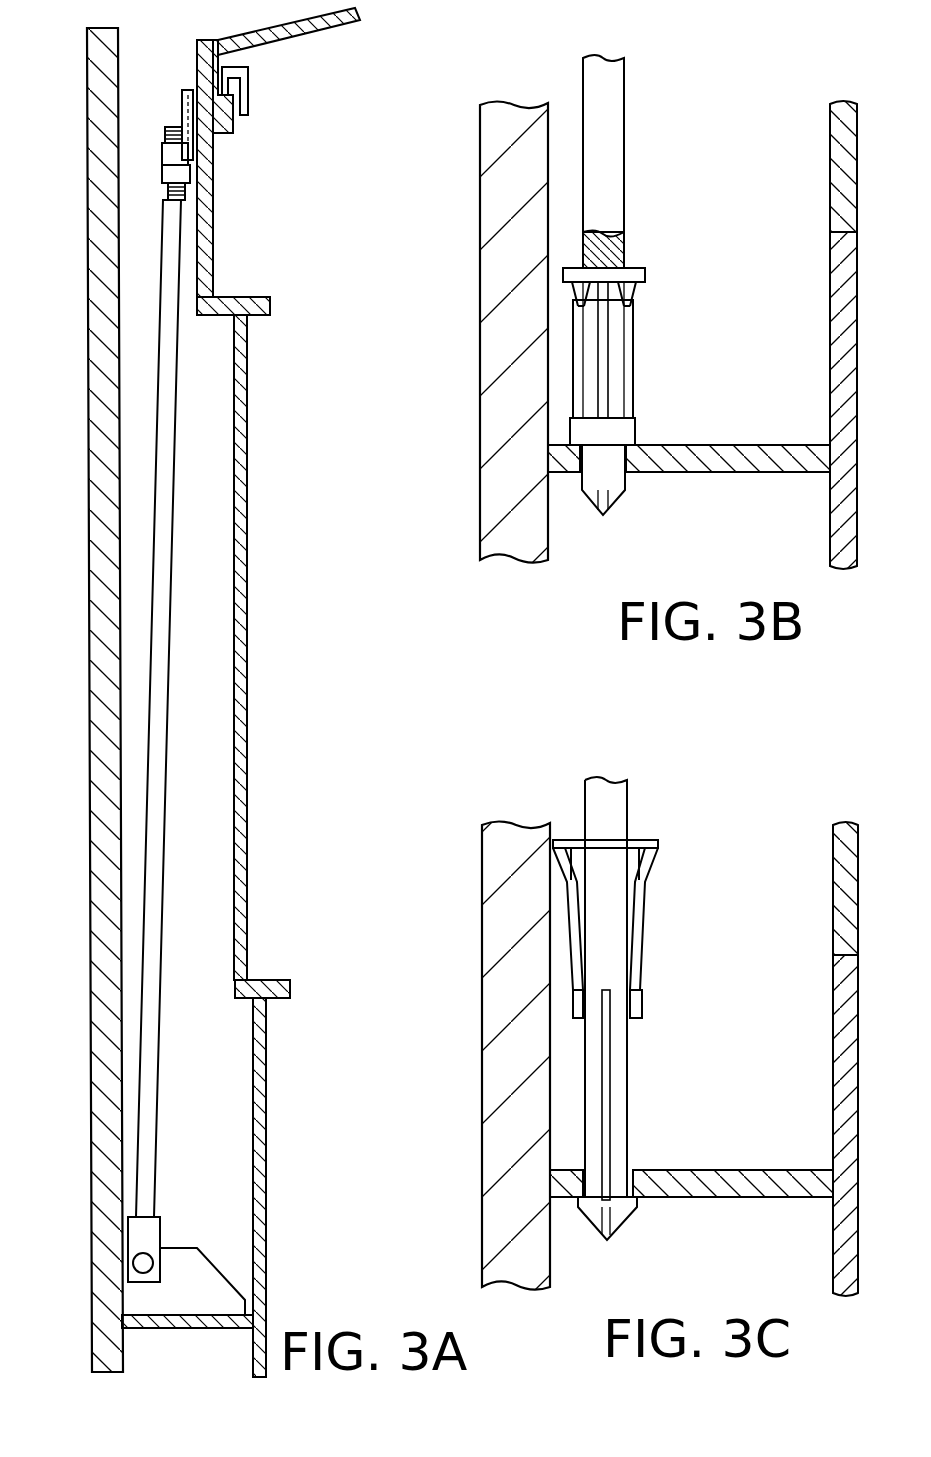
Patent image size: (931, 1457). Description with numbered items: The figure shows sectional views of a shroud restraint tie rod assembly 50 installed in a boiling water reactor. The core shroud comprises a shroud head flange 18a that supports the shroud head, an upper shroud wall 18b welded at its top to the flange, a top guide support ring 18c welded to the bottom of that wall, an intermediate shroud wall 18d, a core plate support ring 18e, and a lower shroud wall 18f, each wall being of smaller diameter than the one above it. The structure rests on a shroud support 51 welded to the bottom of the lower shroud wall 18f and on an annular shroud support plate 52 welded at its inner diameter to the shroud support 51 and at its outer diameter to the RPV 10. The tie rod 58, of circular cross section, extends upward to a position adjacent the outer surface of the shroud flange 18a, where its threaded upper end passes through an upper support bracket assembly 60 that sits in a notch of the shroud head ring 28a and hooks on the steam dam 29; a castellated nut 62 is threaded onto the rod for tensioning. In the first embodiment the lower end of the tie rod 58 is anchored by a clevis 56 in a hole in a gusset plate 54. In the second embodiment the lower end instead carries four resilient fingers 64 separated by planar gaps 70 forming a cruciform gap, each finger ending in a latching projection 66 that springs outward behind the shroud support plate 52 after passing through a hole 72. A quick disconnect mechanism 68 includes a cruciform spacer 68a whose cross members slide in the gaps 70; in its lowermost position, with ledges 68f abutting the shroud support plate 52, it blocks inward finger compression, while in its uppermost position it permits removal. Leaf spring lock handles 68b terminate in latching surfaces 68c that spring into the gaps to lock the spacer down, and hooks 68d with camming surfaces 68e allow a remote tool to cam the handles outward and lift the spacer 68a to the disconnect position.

In FIG. 3A, the RPV 10 is at (90, 615).
In FIG. 3B, the RPV 10 is at (500, 318).
In FIG. 3C, the RPV 10 is at (497, 988).
In FIG. 3A, the shroud head flange 18a is at (235, 128).
In FIG. 3A, the upper shroud wall 18b is at (213, 185).
In FIG. 3A, the top guide support ring 18c is at (222, 297).
In FIG. 3A, the intermediate shroud wall 18d is at (247, 510).
In FIG. 3A, the core plate support ring 18e is at (252, 980).
In FIG. 3A, the lower shroud wall 18f is at (266, 1112).
In FIG. 3B, the lower shroud wall 18f is at (837, 152).
In FIG. 3C, the lower shroud wall 18f is at (840, 895).
In FIG. 3A, the shroud head ring 28a is at (232, 38).
In FIG. 3A, the steam dam 29 is at (250, 80).
In FIG. 3A, the shroud restraint tie rod assembly 50 is at (208, 352).
In FIG. 3A, the shroud support 51 is at (267, 1238).
In FIG. 3B, the shroud support 51 is at (827, 527).
In FIG. 3C, the shroud support 51 is at (837, 1225).
In FIG. 3A, the shroud support plate 52 is at (153, 1330).
In FIG. 3B, the shroud support plate 52 is at (763, 475).
In FIG. 3C, the shroud support plate 52 is at (740, 1192).
In FIG. 3A, the gusset plate 54 is at (192, 1273).
In FIG. 3A, the clevis 56 is at (152, 1232).
In FIG. 3A, the tie rod 58 is at (170, 622).
In FIG. 3B, the tie rod 58 is at (612, 122).
In FIG. 3C, the tie rod 58 is at (612, 830).
In FIG. 3A, the upper support bracket assembly 60 is at (172, 96).
In FIG. 3A, the castellated nut 62 is at (165, 158).
In FIG. 3B, the resilient fingers 64 is at (615, 330).
In FIG. 3C, the resilient fingers 64 is at (617, 1128).
In FIG. 3B, the latching projection 66 is at (637, 477).
In FIG. 3C, the latching projection 66 is at (643, 1202).
In FIG. 3B, the quick disconnect mechanism 68 is at (675, 316).
In FIG. 3C, the quick disconnect mechanism 68 is at (656, 938).
In FIG. 3B, the cruciform spacer 68a is at (596, 494).
In FIG. 3C, the cruciform spacer 68a is at (610, 1038).
In FIG. 3B, the leaf spring lock handles 68b is at (622, 346).
In FIG. 3C, the leaf spring lock handles 68b is at (640, 968).
In FIG. 3B, the latching surface 68c is at (598, 240).
In FIG. 3C, the latching surface 68c is at (577, 838).
In FIG. 3B, the hooks 68d is at (636, 272).
In FIG. 3C, the hooks 68d is at (655, 848).
In FIG. 3B, the camming surface 68e is at (640, 300).
In FIG. 3C, the camming surface 68e is at (647, 880).
In FIG. 3C, the ledges 68f is at (642, 1002).
In FIG. 3B, the planar gap 70 is at (622, 373).
In FIG. 3C, the planar gap 70 is at (620, 1108).
In FIG. 3B, the hole 72 is at (638, 440).
In FIG. 3C, the hole 72 is at (617, 1180).